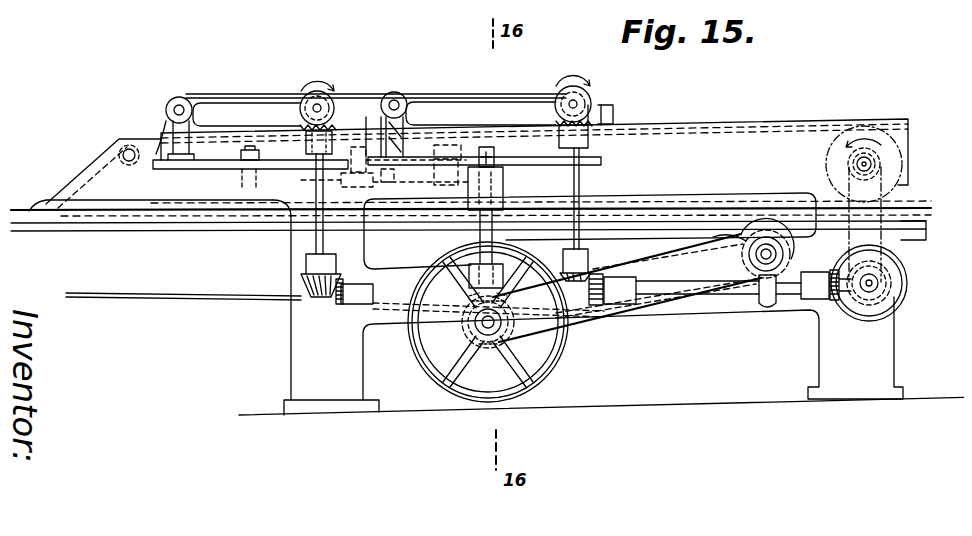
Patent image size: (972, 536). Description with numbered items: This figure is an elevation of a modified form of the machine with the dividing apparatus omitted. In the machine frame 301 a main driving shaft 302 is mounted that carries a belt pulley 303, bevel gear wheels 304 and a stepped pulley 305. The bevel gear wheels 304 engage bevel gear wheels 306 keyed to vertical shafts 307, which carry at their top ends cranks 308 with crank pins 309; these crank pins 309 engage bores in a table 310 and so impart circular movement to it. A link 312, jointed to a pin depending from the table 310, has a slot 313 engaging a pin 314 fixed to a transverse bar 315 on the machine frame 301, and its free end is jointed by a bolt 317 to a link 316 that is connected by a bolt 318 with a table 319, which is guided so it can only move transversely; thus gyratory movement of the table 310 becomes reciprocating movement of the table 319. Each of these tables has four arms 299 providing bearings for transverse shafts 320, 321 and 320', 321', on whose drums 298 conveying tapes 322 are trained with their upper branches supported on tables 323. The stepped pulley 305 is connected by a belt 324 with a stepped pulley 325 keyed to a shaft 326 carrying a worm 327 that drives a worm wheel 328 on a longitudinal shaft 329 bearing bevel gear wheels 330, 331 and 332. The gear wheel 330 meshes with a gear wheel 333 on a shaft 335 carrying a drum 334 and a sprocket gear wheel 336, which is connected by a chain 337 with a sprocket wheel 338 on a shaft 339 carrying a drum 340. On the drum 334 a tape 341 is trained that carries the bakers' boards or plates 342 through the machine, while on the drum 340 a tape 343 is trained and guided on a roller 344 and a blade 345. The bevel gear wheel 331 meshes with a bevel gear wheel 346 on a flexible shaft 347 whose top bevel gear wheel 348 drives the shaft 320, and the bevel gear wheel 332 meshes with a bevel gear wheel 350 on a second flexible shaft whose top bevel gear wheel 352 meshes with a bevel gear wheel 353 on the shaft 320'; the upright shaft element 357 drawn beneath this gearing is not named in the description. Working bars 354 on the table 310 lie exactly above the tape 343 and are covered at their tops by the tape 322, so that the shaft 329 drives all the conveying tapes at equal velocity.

The drums 298 is at (230, 83).
The arms 299 is at (172, 135).
The machine frame 301 is at (890, 368).
The main driving shaft 302 is at (485, 339).
The belt pulley 303 is at (553, 372).
The bevel gear wheels 304 is at (461, 328).
The stepped pulley 305 is at (492, 347).
The bevel gear wheels 306 is at (462, 272).
The vertical shafts 307 is at (508, 262).
The cranks 308 is at (502, 182).
The crank pins 309 is at (497, 160).
The table 310 is at (553, 163).
The link 312 is at (246, 232).
The slot 313 is at (292, 237).
The pin 314 is at (375, 232).
The transverse bar 315 is at (355, 150).
The link 316 is at (238, 180).
The bolt 317 is at (215, 235).
The bolt 318 is at (250, 153).
The table 319 is at (195, 173).
The transverse shaft 320 is at (590, 97).
The transverse shaft 320' is at (333, 91).
The transverse shaft 321 is at (407, 89).
The transverse shaft 321' is at (175, 88).
The conveying tapes 322 is at (258, 105).
The tables 323 is at (245, 100).
The belt 324 is at (604, 325).
The stepped pulley 325 is at (763, 232).
The shaft 326 is at (750, 248).
The worm 327 is at (752, 270).
The worm wheel 328 is at (772, 312).
The shaft 329 is at (652, 300).
The bevel gear wheel 330 is at (830, 305).
The bevel gear wheel 331 is at (582, 322).
The bevel gear wheel 332 is at (332, 308).
The gear wheel 333 is at (889, 283).
The drum 334 is at (895, 268).
The shaft 335 is at (869, 293).
The sprocket gear wheel 336 is at (873, 290).
The chain 337 is at (886, 208).
The sprocket wheel 338 is at (882, 170).
The shaft 339 is at (870, 168).
The drum 340 is at (875, 137).
The tape 341 is at (180, 302).
The bakers' boards or plates 342 is at (15, 222).
The tape 343 is at (700, 130).
The roller 344 is at (126, 152).
The blade 345 is at (50, 205).
The bevel gear wheel 346 is at (590, 263).
The flexible shaft 347 is at (579, 190).
The bevel gear wheel 348 is at (607, 120).
The bevel gear wheel 350 is at (312, 281).
The bevel gear wheel 352 is at (310, 97).
The bevel gear wheel 353 is at (330, 105).
The working bars 354 is at (481, 114).
The vertical shaft 357 is at (322, 243).